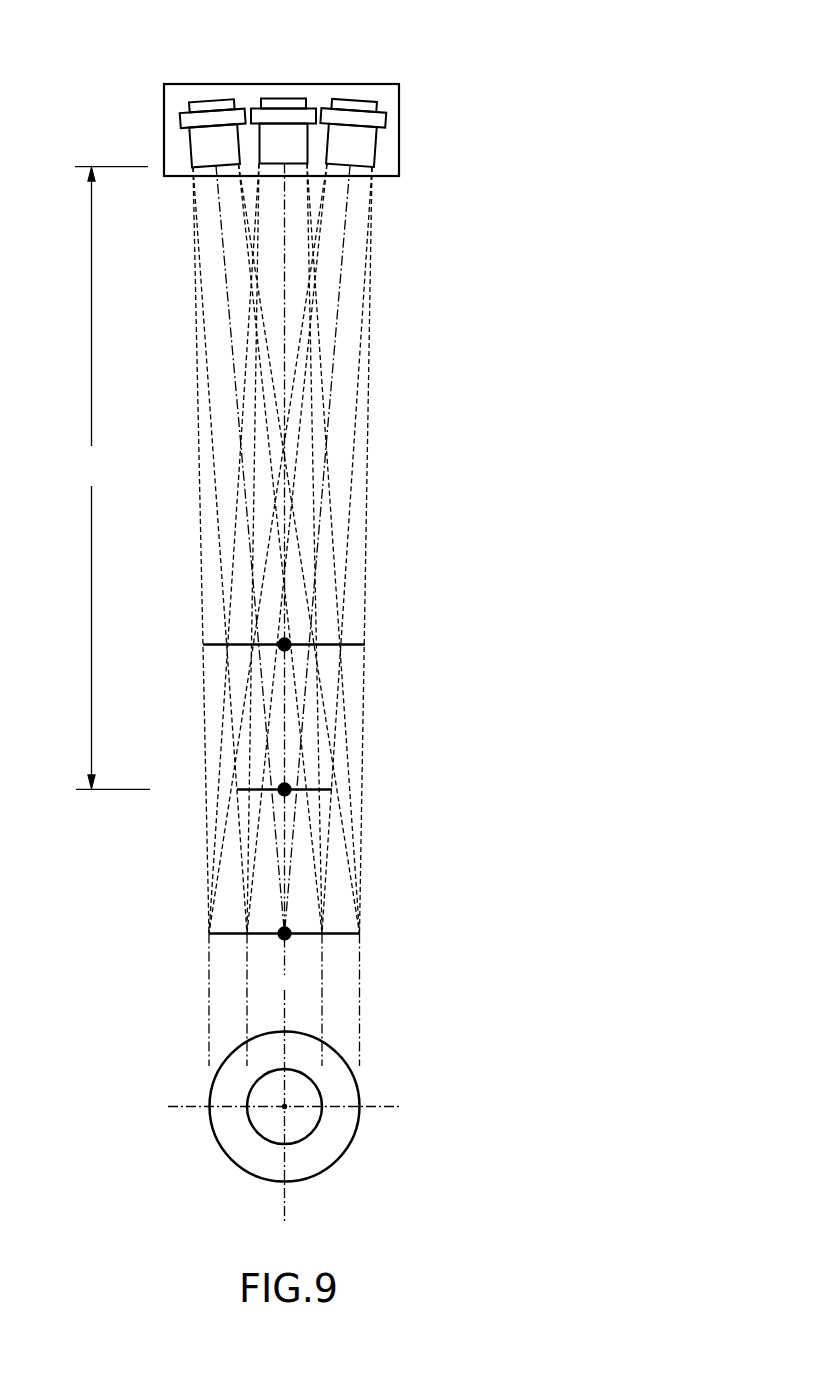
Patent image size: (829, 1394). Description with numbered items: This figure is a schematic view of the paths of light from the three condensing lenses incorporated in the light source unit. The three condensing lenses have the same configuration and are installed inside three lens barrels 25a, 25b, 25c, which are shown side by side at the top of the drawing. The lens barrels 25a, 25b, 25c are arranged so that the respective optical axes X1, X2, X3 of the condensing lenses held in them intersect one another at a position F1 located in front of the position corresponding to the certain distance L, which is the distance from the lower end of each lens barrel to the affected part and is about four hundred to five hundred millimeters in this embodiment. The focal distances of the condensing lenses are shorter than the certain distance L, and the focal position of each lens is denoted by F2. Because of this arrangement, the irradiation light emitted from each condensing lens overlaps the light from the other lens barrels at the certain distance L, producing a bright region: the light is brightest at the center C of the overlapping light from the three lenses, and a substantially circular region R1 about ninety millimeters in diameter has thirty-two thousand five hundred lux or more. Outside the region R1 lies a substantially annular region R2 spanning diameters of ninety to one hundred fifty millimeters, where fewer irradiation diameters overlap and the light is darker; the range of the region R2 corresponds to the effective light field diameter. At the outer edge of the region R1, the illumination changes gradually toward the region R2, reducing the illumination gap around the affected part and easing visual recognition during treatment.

The lens barrel 25a is at (210, 138).
The lens barrel 25b is at (281, 137).
The lens barrel 25c is at (352, 137).
The optical axis X1 is at (223, 254).
The optical axis X2 is at (286, 261).
The optical axis X3 is at (336, 340).
The focal position F2 is at (290, 650).
The center position C is at (289, 795).
The intersection position F1 is at (281, 930).
The substantially circular region R1 is at (320, 1123).
The substantially annular region R2 is at (211, 1133).
The certain distance L is at (91, 478).